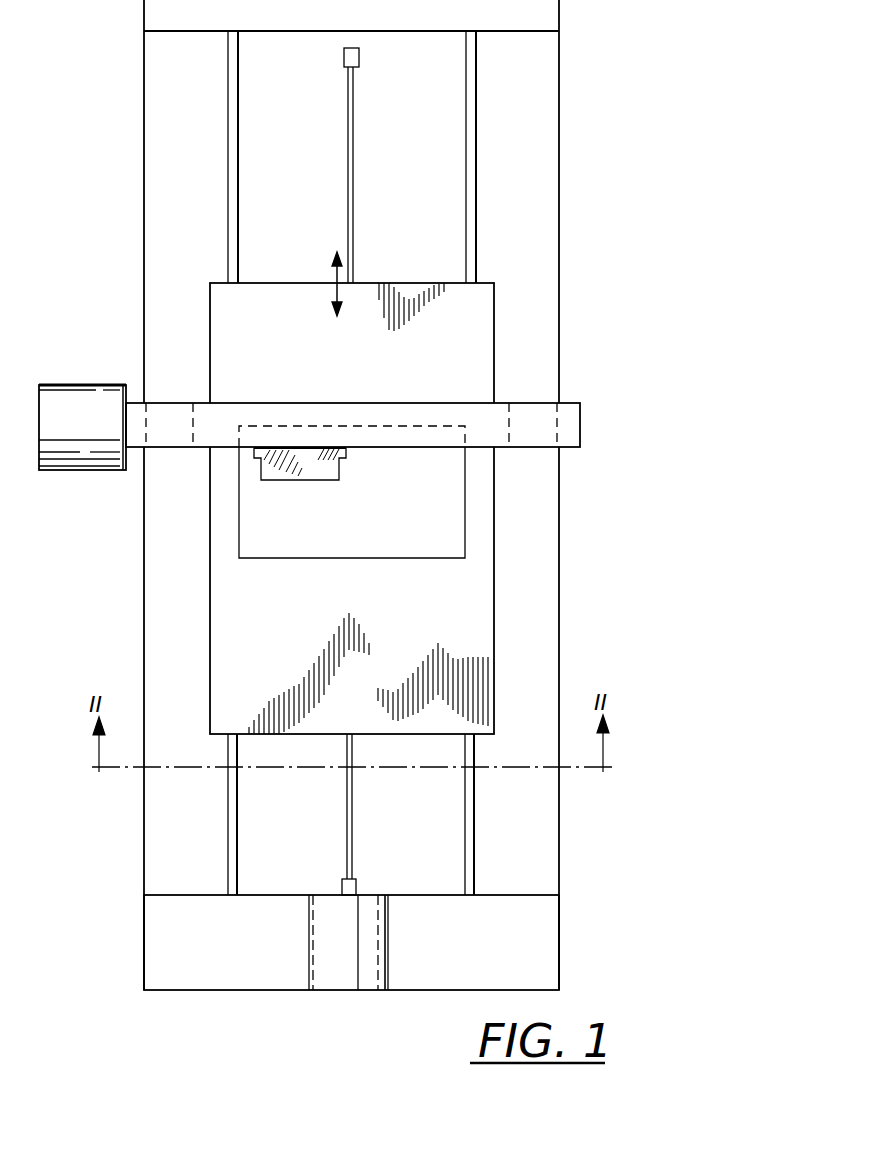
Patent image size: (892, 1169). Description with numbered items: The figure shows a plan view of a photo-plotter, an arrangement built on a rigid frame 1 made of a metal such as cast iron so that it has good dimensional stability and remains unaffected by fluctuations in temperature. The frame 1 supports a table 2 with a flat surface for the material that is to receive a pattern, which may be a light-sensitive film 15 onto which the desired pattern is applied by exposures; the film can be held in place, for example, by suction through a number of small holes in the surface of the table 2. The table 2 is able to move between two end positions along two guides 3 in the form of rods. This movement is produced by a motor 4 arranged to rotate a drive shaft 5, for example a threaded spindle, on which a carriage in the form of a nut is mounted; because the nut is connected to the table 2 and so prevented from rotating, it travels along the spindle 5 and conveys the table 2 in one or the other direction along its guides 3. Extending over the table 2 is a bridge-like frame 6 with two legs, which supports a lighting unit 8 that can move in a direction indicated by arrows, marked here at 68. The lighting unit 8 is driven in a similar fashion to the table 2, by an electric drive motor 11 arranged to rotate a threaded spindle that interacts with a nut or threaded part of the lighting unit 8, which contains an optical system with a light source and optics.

The frame 1 is at (156, 823).
The table 2 is at (220, 682).
The guides 3 is at (230, 163).
The motor 4 is at (334, 965).
The drive shaft 5 is at (347, 849).
The bridge-like frame 6 is at (210, 412).
The lighting unit 8 is at (260, 467).
The electric drive motor 11 is at (108, 437).
The light-sensitive film 15 is at (253, 543).
The direction arrow 68 is at (337, 277).